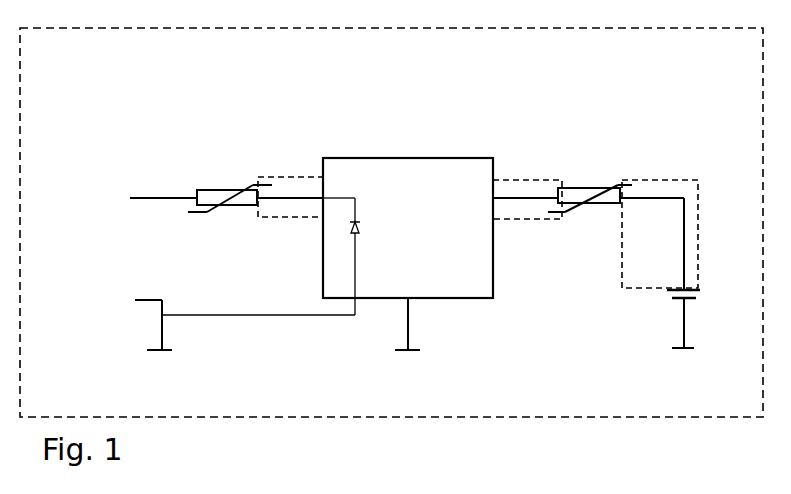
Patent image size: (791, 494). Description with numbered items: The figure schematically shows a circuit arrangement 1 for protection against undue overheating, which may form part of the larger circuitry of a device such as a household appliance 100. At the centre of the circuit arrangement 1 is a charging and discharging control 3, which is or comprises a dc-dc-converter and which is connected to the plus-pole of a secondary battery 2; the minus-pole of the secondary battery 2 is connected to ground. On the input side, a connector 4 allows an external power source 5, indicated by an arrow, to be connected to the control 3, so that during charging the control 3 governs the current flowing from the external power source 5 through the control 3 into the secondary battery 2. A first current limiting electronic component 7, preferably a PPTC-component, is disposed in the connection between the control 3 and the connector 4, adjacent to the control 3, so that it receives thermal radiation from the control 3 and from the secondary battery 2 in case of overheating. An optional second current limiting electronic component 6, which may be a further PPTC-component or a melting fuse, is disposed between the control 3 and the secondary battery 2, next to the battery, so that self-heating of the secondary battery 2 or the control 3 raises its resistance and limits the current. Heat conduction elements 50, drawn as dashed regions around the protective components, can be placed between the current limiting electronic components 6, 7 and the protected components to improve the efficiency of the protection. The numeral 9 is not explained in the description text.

The circuit arrangement 1 is at (203, 102).
The household appliance 100 is at (391, 222).
The secondary battery 2 is at (712, 292).
The charging and discharging control 3 is at (426, 207).
The connector 4 is at (98, 215).
The external power source 5 is at (116, 255).
The second current limiting electronic component 6 is at (590, 188).
The first current limiting electronic component 7 is at (227, 190).
The diode 9 is at (357, 231).
The heat conduction elements 50 is at (283, 177).